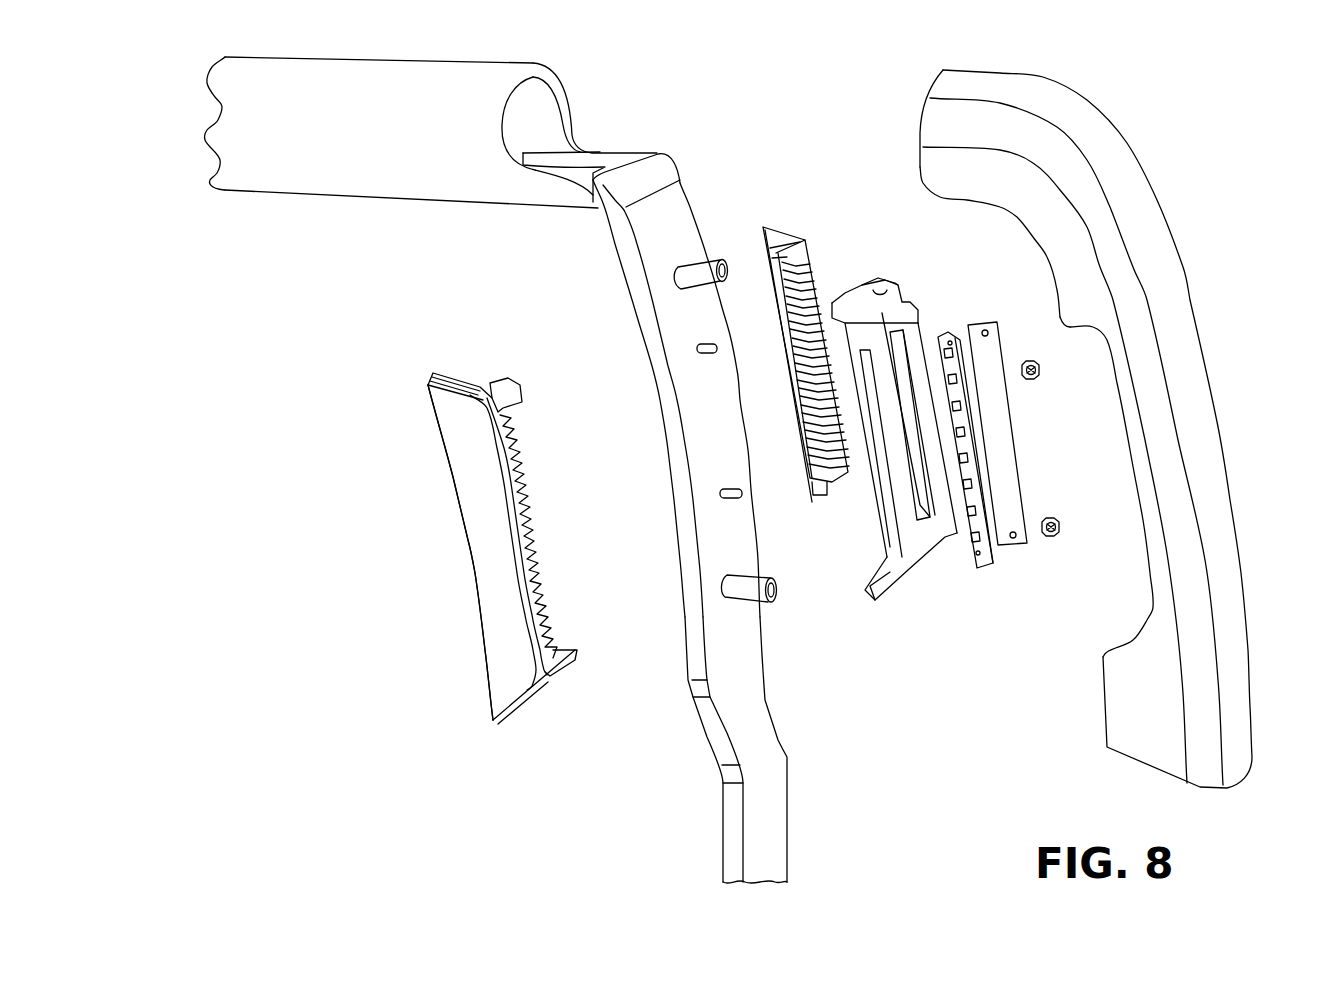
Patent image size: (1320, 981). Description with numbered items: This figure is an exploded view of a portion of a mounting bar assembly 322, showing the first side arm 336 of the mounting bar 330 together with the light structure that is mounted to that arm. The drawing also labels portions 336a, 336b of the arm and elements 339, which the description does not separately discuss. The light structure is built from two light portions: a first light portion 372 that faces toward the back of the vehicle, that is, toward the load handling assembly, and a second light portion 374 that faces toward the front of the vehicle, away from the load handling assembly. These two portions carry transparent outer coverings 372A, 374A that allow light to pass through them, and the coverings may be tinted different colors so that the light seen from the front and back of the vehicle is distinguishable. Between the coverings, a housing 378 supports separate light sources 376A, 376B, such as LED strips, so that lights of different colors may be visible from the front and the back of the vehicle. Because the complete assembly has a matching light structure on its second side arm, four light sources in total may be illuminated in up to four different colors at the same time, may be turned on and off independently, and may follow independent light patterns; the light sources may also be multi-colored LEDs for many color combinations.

The mounting bar assembly 322 is at (352, 292).
The mounting bar 330 is at (659, 133).
The first side arm 336 is at (627, 243).
The lower end portion of handle body 336a is at (693, 667).
The handle cover 336b is at (1140, 230).
The mounting pegs 339 is at (724, 263).
The first light portion 372 is at (812, 252).
The transparent outer covering 372A is at (828, 292).
The second light portion 374 is at (468, 482).
The transparent outer covering 374A is at (490, 597).
The light source 376A is at (977, 560).
The light source 376B is at (1020, 445).
The housing 378 is at (893, 294).